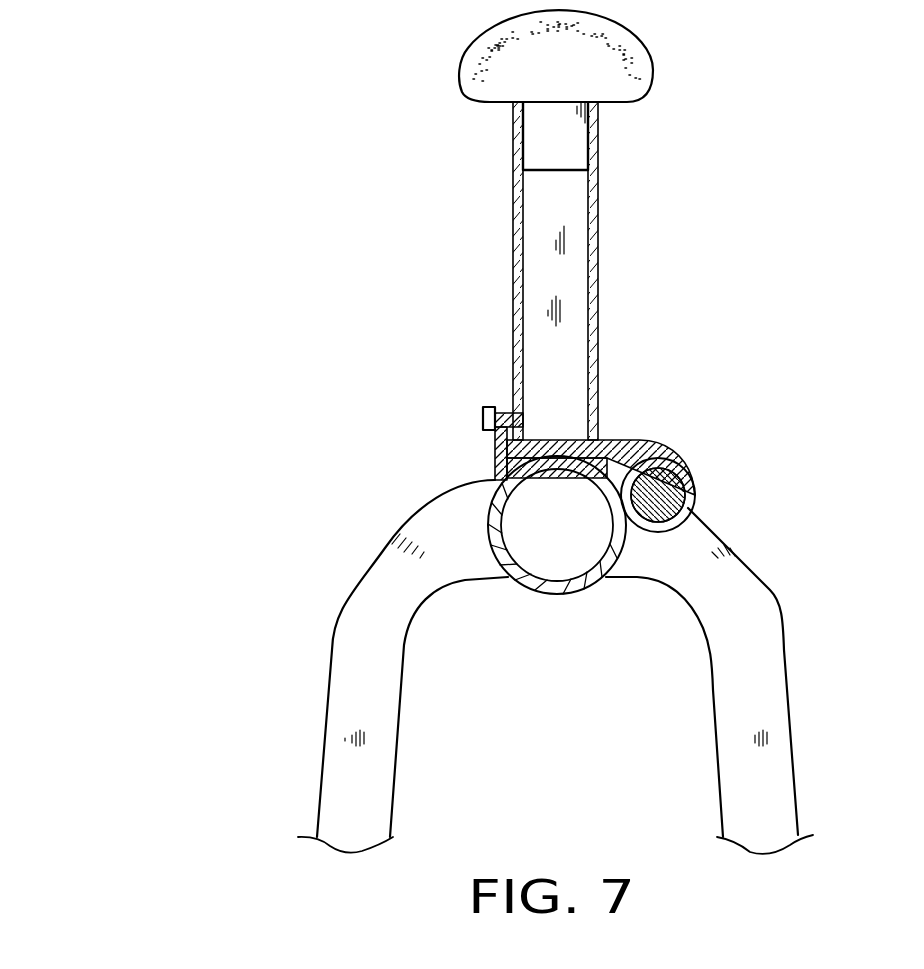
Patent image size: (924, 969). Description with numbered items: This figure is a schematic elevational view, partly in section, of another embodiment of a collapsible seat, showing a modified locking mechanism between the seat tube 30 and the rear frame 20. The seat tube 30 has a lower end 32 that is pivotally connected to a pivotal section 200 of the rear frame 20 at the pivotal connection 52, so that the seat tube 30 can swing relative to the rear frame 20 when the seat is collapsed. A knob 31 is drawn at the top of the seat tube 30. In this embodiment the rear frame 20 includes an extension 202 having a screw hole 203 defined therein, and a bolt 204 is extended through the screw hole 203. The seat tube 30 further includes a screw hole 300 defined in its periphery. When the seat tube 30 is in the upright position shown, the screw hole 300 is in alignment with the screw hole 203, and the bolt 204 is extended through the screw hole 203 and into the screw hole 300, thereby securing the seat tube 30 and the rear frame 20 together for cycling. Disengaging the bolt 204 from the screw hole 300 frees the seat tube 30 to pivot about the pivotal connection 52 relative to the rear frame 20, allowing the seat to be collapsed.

The rear frame 20 is at (740, 590).
The seat tube 30 is at (597, 324).
The knob 31 is at (582, 71).
The lower end 32 is at (657, 443).
The pivotal connection 52 is at (693, 478).
The pivotal section 200 is at (581, 470).
The extension 202 is at (495, 450).
The screw hole 203 is at (502, 418).
The bolt 204 is at (487, 422).
The screw hole 300 is at (523, 415).